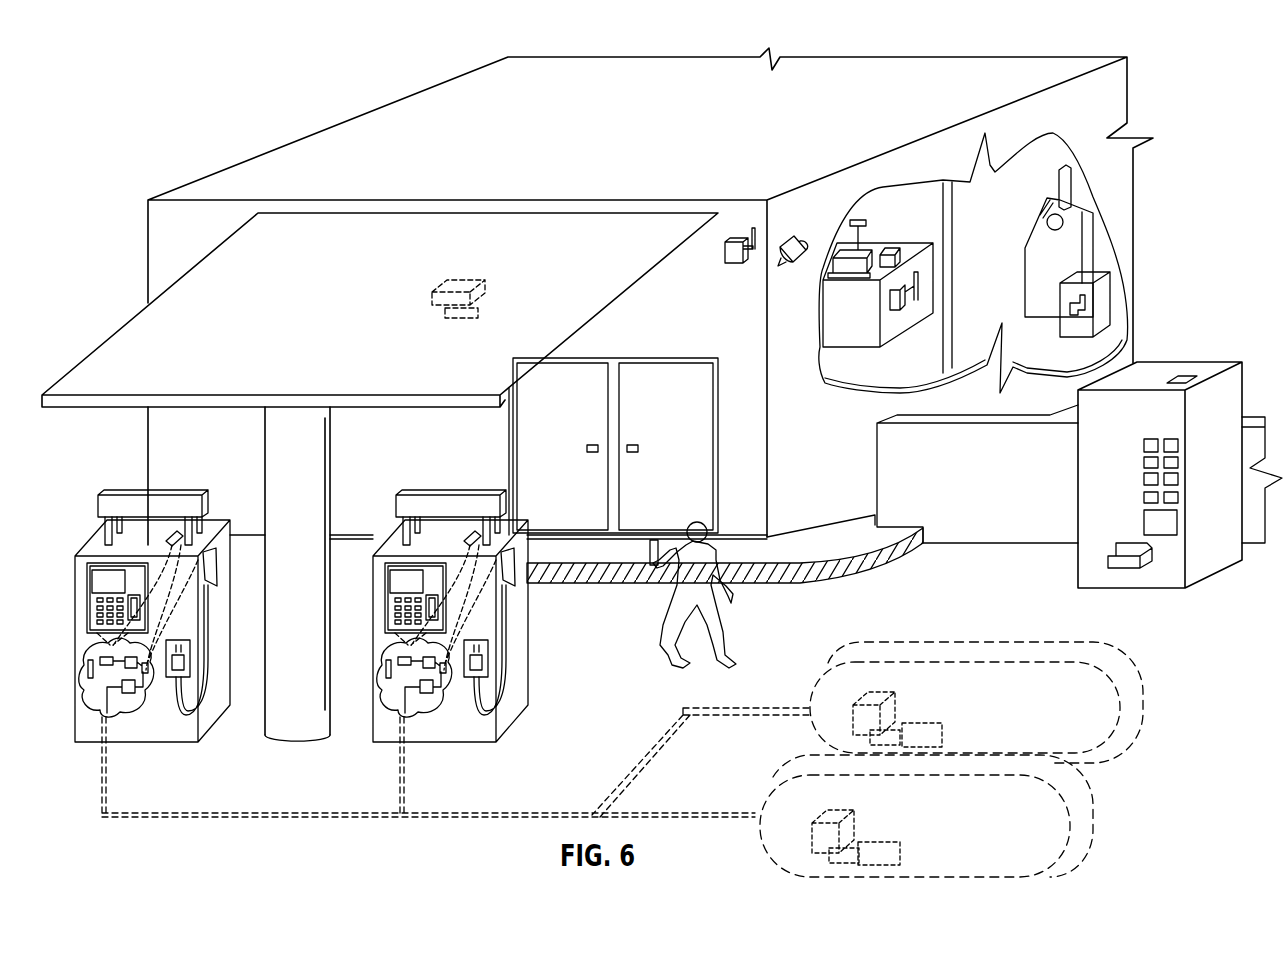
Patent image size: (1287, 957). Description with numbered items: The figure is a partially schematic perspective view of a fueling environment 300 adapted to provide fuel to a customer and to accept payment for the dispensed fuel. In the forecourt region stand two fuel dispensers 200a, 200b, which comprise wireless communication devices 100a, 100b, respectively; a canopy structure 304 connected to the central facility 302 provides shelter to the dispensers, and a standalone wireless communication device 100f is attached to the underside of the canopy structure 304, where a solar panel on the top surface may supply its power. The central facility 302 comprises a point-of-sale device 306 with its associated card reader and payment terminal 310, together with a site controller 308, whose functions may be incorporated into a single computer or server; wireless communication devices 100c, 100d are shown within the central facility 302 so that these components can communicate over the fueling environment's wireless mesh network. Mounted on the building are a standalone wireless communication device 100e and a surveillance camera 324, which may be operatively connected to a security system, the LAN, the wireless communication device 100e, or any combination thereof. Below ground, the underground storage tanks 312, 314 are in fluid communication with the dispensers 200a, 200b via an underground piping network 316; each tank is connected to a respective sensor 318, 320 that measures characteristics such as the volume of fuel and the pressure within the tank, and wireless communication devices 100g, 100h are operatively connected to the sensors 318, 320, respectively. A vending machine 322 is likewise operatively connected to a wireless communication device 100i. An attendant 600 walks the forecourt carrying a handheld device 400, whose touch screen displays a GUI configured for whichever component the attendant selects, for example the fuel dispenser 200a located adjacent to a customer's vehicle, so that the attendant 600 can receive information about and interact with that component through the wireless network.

The fueling environment 300 is at (226, 153).
The central facility 302 is at (800, 97).
The canopy structure 304 is at (375, 254).
The point-of-sale device 306 is at (836, 254).
The site controller 308 is at (1062, 334).
The card reader and payment terminal 310 is at (892, 250).
The underground storage tank 312 is at (1007, 717).
The underground storage tank 314 is at (973, 827).
The underground piping network 316 is at (320, 820).
The sensor 318 is at (920, 722).
The sensor 320 is at (878, 842).
The vending machine 322 is at (1228, 392).
The surveillance camera 324 is at (790, 268).
The handheld device 400 is at (656, 540).
The attendant 600 is at (714, 556).
The fuel dispenser 200a is at (367, 550).
The fuel dispenser 200b is at (68, 548).
The wireless communication device 100a is at (473, 535).
The wireless communication device 100b is at (175, 535).
The wireless communication device 100c is at (901, 311).
The wireless communication device 100d is at (1062, 302).
The wireless communication device 100e is at (732, 264).
The wireless communication device 100f is at (465, 274).
The wireless communication device 100g is at (878, 703).
The wireless communication device 100h is at (838, 822).
The wireless communication device 100i is at (1181, 375).